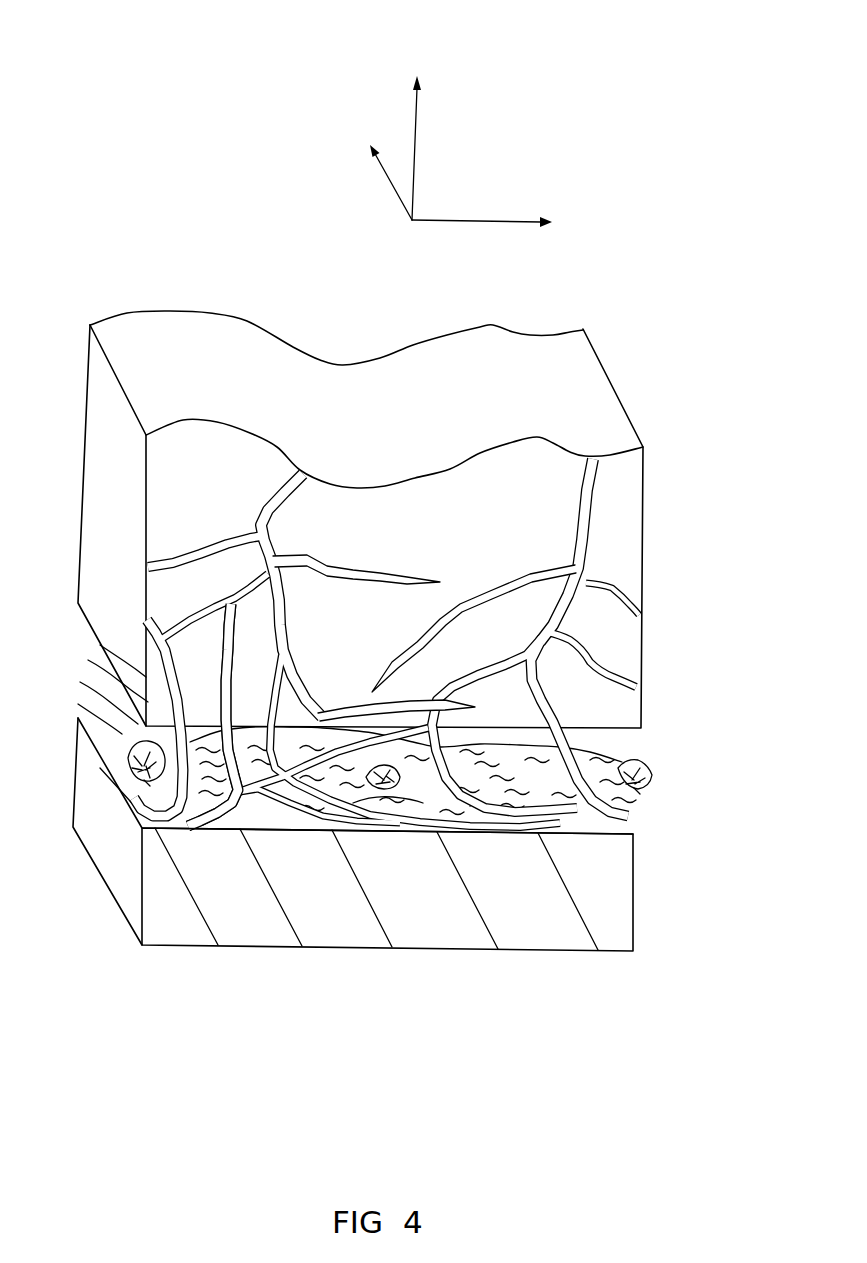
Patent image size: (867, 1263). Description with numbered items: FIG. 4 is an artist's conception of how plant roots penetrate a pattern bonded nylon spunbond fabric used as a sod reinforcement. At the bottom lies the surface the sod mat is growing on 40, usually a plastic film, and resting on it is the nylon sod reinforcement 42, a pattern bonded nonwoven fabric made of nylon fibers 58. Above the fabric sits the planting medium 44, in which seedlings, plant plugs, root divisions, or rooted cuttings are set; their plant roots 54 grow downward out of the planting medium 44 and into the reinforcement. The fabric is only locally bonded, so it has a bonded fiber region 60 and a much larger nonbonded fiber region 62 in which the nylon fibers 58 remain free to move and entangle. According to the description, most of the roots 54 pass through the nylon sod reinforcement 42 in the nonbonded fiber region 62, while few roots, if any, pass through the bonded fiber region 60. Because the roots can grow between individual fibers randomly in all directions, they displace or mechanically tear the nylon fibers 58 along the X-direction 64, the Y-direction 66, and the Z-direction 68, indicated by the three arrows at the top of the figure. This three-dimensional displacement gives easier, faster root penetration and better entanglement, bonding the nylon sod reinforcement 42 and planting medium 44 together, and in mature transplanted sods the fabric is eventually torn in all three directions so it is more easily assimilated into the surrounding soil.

The surface the sod mat is growing on 40 is at (553, 957).
The nylon sod reinforcement 42 is at (625, 798).
The planting medium 44 is at (645, 510).
The plant roots 54 is at (572, 600).
The nylon fibers 58 is at (563, 800).
The bonded fiber region 60 is at (622, 762).
The nonbonded fiber region 62 is at (217, 797).
The X-direction 64 is at (521, 225).
The Y-direction 66 is at (352, 171).
The Z-direction 68 is at (420, 112).